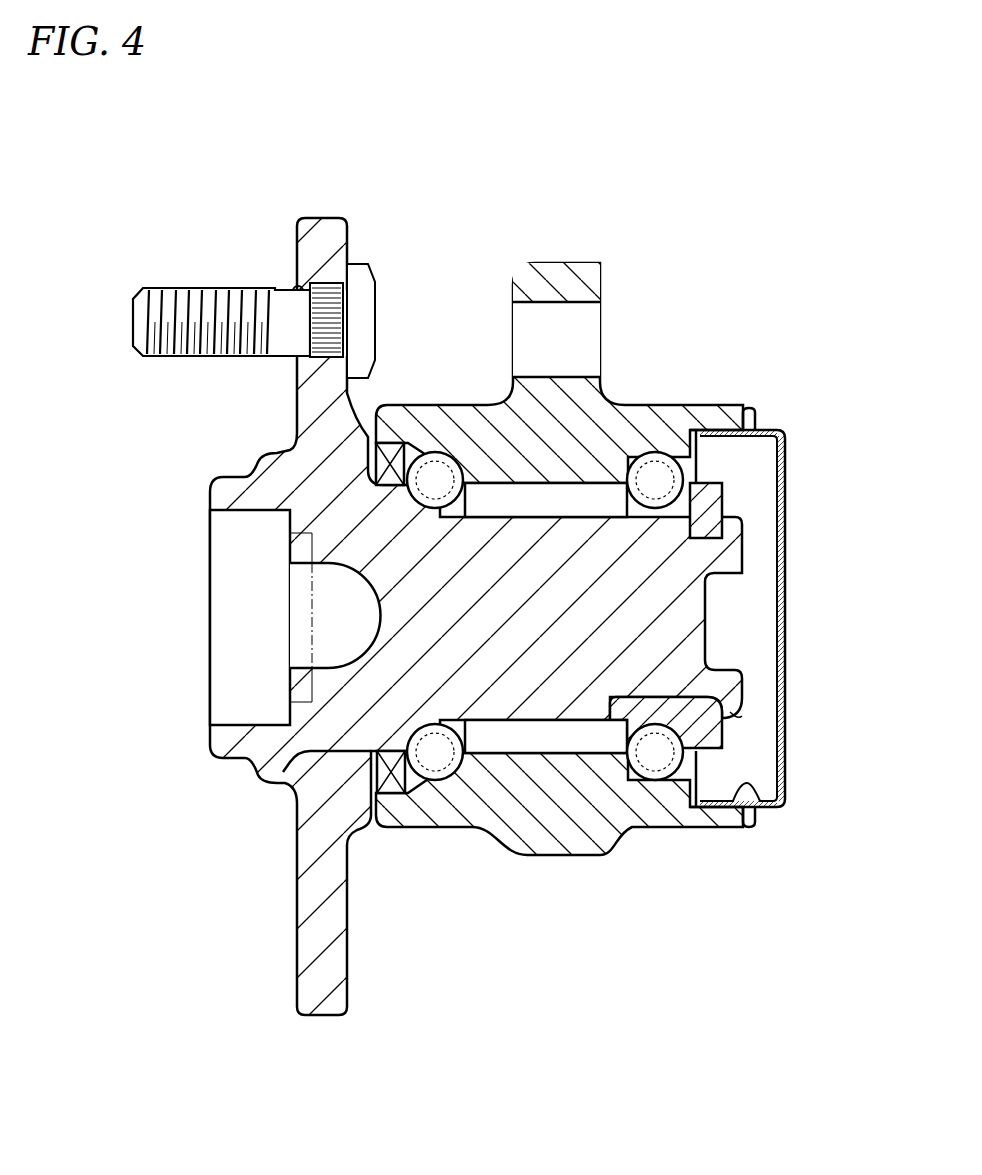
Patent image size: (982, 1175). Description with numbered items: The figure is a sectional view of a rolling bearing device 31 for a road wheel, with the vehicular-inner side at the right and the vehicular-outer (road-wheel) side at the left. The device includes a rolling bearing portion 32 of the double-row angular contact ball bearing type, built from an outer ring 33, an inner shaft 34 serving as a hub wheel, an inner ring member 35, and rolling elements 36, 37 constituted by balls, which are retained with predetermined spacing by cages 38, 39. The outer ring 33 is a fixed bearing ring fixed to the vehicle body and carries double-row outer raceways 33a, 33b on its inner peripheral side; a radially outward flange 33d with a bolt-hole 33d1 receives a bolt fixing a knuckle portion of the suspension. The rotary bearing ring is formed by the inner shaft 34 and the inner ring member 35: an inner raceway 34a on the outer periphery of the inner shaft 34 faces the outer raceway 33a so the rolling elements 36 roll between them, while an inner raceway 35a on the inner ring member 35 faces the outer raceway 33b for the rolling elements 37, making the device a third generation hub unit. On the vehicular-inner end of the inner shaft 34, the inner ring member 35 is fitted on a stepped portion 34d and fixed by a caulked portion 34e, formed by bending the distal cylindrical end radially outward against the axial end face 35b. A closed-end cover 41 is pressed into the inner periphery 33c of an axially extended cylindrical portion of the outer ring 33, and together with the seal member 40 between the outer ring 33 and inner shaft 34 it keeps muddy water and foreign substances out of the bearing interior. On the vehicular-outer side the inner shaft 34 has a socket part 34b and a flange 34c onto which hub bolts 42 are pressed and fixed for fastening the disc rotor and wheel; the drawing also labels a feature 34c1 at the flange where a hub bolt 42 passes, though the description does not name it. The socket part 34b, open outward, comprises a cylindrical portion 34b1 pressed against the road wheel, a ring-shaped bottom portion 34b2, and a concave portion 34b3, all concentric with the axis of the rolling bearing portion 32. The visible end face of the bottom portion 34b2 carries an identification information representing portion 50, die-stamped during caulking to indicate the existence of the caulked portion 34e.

The rolling bearing device 31 is at (481, 567).
The rolling bearing portion 32 is at (630, 548).
The outer ring 33 is at (616, 548).
The outer raceway 33a is at (447, 753).
The outer raceway 33b is at (655, 770).
The inner periphery of the cylindrical portion 33c is at (765, 805).
The flange 33d is at (567, 290).
The bolt-hole 33d1 is at (538, 303).
The inner shaft 34 is at (481, 567).
The inner raceway 34a is at (270, 783).
The socket part 34b is at (211, 479).
The cylindrical portion 34b1 is at (210, 488).
The bottom portion 34b2 is at (290, 548).
The concave portion 34b3 is at (302, 650).
The flange 34c is at (327, 237).
The bolt hole 34c1 is at (299, 288).
The stepped portion 34d is at (697, 705).
The caulked portion 34e is at (737, 717).
The inner ring member 35 is at (747, 685).
The inner raceway 35a is at (683, 720).
The axial end face 35b is at (713, 747).
The rolling elements 36 is at (430, 453).
The rolling elements 37 is at (652, 452).
The cage 38 is at (480, 760).
The cage 39 is at (603, 753).
The seal member 40 is at (390, 788).
The cover 41 is at (789, 587).
The hub bolts 42 is at (172, 283).
The identification information representing portion 50 is at (290, 630).